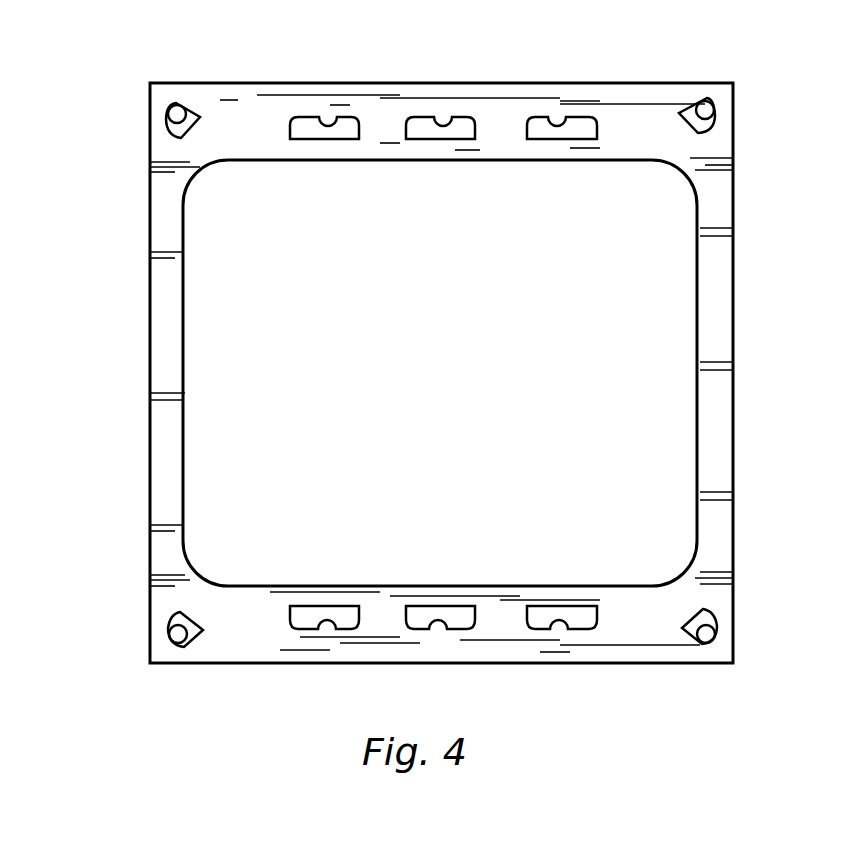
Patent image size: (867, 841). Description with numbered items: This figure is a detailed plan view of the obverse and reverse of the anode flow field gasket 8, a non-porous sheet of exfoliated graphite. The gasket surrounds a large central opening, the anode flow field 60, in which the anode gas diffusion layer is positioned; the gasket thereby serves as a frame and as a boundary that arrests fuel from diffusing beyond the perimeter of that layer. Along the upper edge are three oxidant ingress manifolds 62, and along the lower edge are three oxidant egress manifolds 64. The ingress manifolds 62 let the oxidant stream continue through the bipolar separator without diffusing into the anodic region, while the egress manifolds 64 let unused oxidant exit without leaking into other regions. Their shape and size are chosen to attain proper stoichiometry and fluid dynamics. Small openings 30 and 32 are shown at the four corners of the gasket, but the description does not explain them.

The anode flow field gasket 8 is at (108, 420).
The upper mounting holes 30 is at (166, 123).
The lower mounting holes 32 is at (168, 622).
The anode flow field 60 is at (189, 303).
The oxidant ingress manifolds 62 is at (326, 120).
The oxidant egress manifolds 64 is at (323, 627).